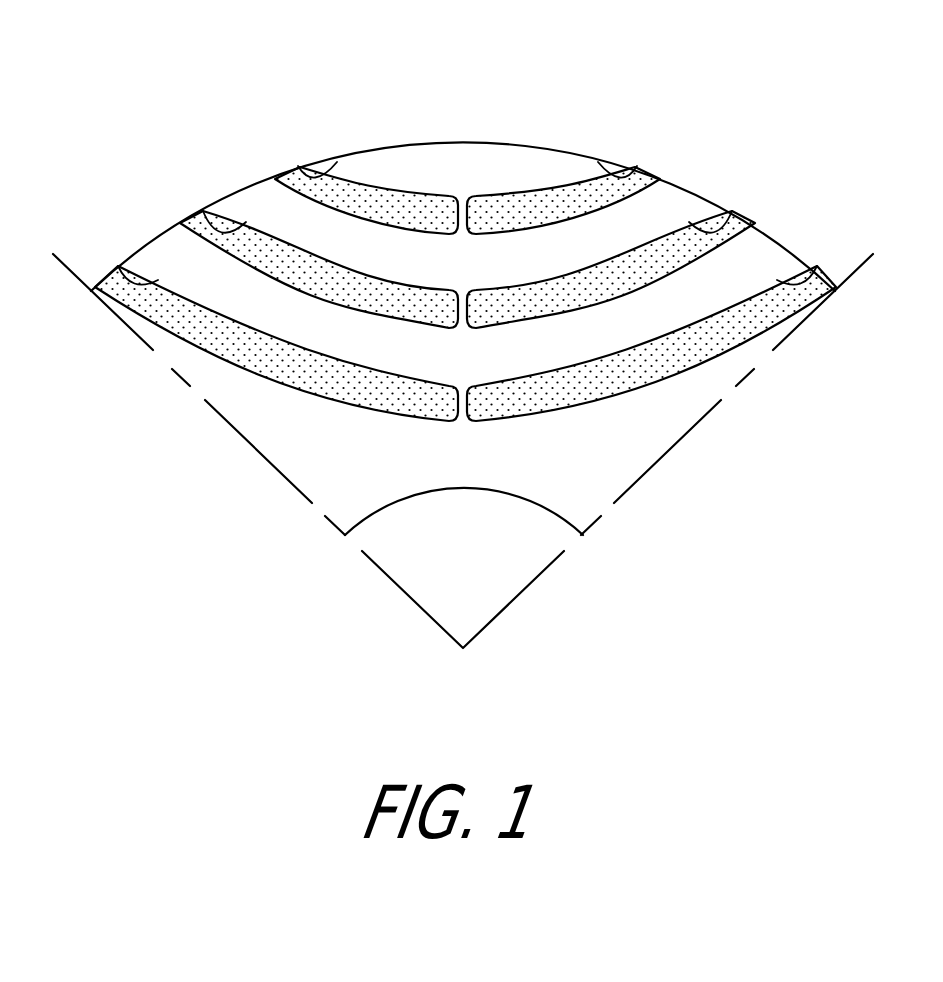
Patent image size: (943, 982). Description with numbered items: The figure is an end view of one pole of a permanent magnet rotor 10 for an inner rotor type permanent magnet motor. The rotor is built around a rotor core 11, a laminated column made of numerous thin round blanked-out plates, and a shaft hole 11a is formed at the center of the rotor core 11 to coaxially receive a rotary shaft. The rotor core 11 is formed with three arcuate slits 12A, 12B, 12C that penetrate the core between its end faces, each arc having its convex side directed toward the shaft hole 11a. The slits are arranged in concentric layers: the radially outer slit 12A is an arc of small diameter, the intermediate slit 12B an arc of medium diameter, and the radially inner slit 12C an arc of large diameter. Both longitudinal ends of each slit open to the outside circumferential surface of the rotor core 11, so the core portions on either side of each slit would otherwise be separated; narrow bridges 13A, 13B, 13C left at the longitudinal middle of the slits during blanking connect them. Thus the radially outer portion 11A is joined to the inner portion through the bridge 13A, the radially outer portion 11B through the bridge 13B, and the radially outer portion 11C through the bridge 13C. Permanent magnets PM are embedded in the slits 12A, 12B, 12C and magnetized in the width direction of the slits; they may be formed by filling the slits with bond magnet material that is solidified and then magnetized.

The permanent magnet rotor 10 is at (463, 349).
The rotor core 11 is at (612, 457).
The shaft hole 11a is at (487, 490).
The radially outer portion 11A is at (427, 165).
The radially outer portion 11B is at (580, 245).
The radially outer portion 11C is at (660, 323).
The slit 12A is at (300, 166).
The slit 12B is at (203, 211).
The slit 12C is at (118, 266).
The narrow bridge 13A is at (466, 220).
The narrow bridge 13B is at (462, 310).
The narrow bridge 13C is at (463, 400).
The permanent magnet PM is at (802, 268).